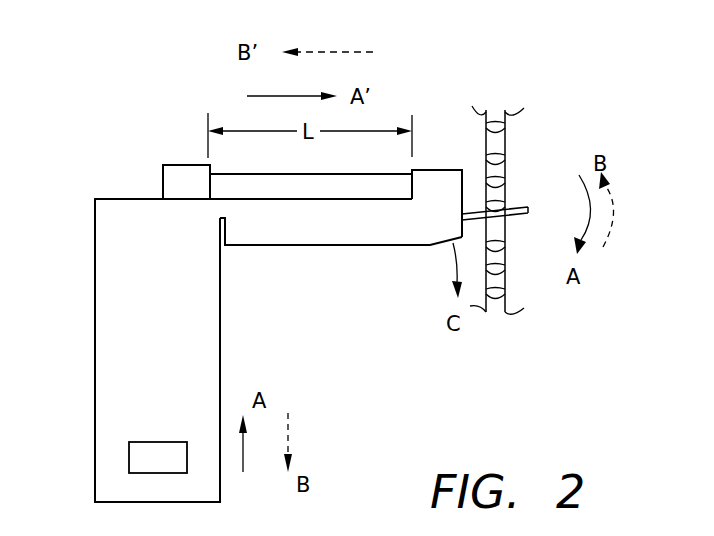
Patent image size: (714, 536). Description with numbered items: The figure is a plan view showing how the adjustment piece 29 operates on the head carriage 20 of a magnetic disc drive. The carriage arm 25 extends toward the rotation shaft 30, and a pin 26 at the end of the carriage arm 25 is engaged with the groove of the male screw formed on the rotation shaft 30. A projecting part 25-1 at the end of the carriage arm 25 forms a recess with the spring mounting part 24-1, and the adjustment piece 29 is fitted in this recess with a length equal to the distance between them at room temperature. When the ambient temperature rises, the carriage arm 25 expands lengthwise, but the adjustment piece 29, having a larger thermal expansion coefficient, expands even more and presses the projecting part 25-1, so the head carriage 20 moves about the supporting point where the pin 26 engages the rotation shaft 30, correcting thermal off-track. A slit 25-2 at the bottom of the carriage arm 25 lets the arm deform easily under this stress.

The head carriage 20 is at (203, 356).
The spring mounting part 24-1 is at (187, 178).
The carriage arm 25 is at (407, 230).
The projecting part 25-1 is at (440, 177).
The slit 25-2 is at (227, 228).
The pin 26 is at (512, 208).
The adjustment piece 29 is at (313, 186).
The rotation shaft 30 is at (500, 144).